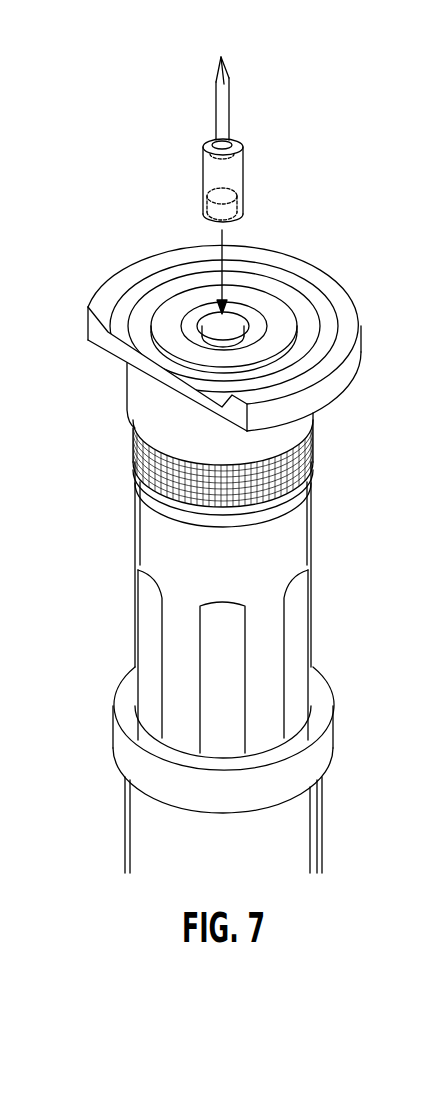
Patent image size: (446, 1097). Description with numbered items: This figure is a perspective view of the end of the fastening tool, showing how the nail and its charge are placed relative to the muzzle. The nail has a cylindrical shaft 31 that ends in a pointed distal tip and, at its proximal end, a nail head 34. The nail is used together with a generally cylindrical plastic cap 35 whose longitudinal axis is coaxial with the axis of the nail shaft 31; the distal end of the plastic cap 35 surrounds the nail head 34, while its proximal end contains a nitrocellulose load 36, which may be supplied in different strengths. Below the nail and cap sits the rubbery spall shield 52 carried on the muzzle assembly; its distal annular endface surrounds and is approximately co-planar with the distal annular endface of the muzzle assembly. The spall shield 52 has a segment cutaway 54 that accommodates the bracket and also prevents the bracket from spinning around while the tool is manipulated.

The cylindrical shaft 31 is at (220, 98).
The nail head 34 is at (233, 160).
The plastic cap 35 is at (210, 175).
The nitrocellulose load 36 is at (230, 212).
The spall shield 52 is at (331, 287).
The segment cutaway 54 is at (108, 343).